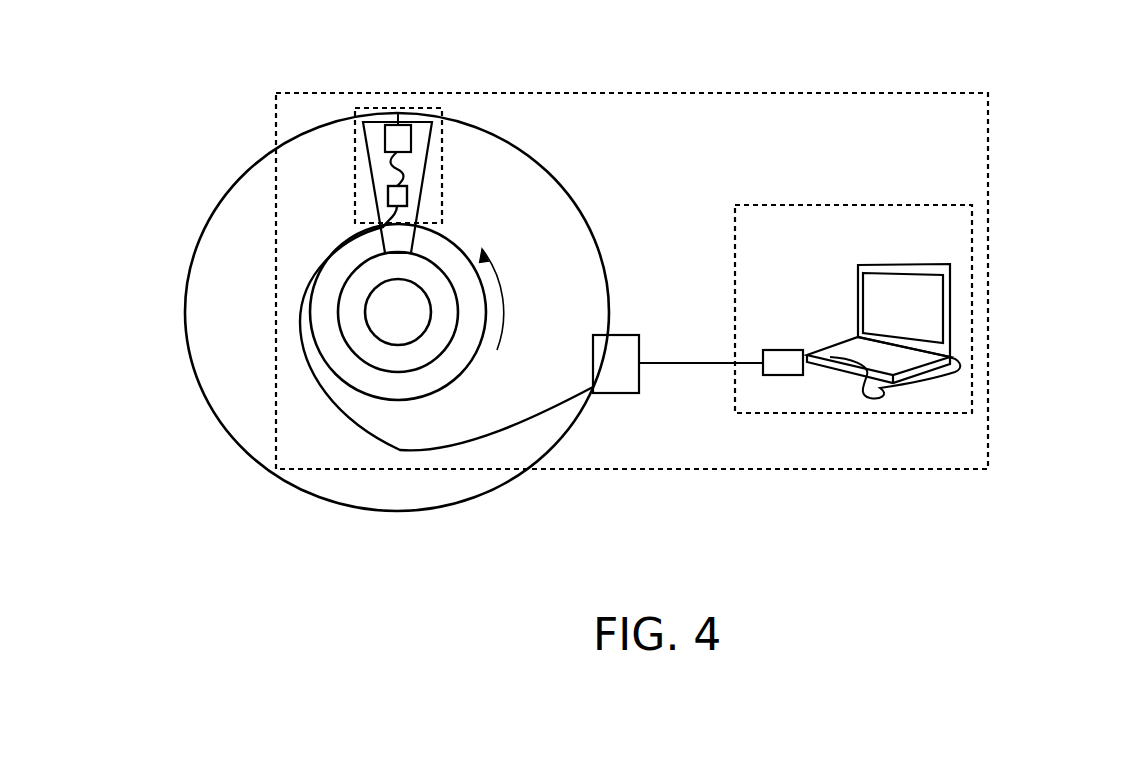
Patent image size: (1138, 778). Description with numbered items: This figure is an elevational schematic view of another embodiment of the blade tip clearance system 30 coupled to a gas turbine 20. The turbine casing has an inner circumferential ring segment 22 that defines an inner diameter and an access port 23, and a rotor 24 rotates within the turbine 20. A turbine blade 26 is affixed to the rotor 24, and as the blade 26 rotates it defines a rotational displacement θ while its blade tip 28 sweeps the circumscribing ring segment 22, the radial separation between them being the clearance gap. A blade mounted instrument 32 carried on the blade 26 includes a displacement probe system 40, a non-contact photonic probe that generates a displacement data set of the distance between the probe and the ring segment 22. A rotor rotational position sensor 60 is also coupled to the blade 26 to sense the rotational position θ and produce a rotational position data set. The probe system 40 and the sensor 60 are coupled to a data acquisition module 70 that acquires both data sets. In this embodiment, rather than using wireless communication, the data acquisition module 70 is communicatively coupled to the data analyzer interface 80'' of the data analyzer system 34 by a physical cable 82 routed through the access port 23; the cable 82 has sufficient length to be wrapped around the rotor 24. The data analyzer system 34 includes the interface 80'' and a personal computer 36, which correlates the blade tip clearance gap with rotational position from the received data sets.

The gas turbine 20 is at (386, 281).
The inner circumferential ring segment 22 is at (218, 380).
The access port 23 is at (577, 400).
The rotor 24 is at (422, 350).
The turbine blade 26 is at (388, 173).
The blade tip 28 is at (352, 114).
The blade tip clearance system 30 is at (1012, 134).
The blade mounted instrument 32 is at (346, 187).
The blade tip clearance data analyzer system 34 is at (563, 421).
The personal computer 36 is at (913, 300).
The displacement probe system 40 is at (402, 133).
The rotor rotational position acquisition system sensor 60 is at (405, 195).
The data acquisition module 70 is at (583, 175).
The data analyzer interface 80'' is at (806, 445).
The cable 82 is at (627, 355).